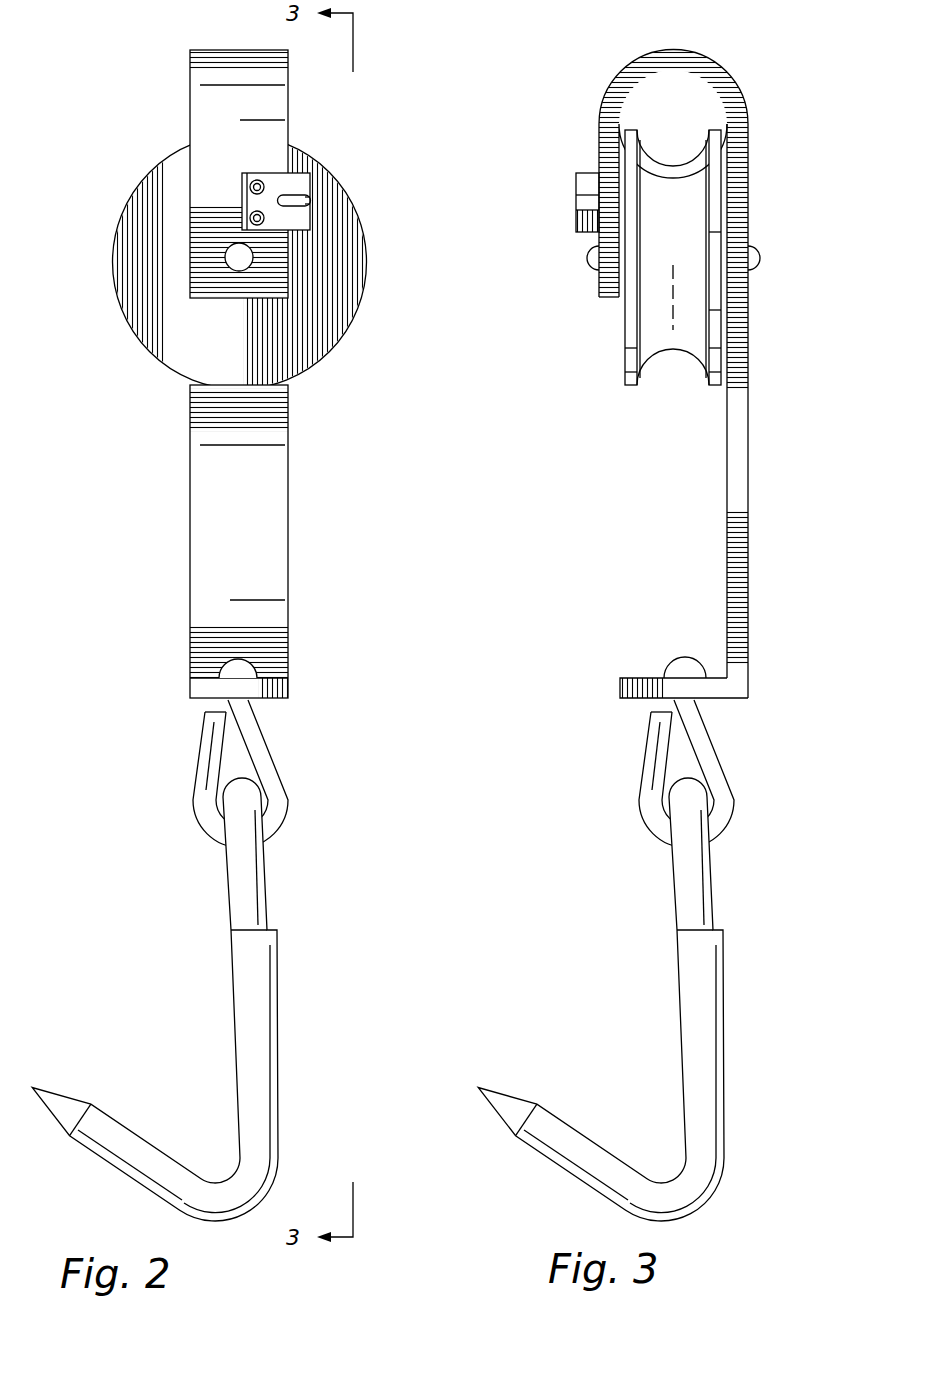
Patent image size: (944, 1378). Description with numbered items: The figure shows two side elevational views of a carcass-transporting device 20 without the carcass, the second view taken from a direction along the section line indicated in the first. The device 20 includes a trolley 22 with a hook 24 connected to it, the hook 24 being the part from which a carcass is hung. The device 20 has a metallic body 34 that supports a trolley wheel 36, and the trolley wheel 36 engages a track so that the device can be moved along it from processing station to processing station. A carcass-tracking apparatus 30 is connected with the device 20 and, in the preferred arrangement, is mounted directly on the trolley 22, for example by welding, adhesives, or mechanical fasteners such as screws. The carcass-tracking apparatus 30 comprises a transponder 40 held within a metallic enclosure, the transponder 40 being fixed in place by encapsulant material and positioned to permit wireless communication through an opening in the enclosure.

In FIG. 2, the carcass-transporting device 20 is at (85, 84).
In FIG. 3, the carcass-transporting device 20 is at (786, 80).
In FIG. 2, the trolley 22 is at (235, 57).
In FIG. 3, the trolley 22 is at (673, 52).
In FIG. 2, the hook 24 is at (233, 1012).
In FIG. 3, the hook 24 is at (678, 1001).
In FIG. 2, the carcass-tracking apparatus 30 is at (270, 172).
In FIG. 3, the carcass-tracking apparatus 30 is at (576, 185).
In FIG. 2, the metallic body 34 is at (290, 515).
In FIG. 3, the metallic body 34 is at (752, 478).
In FIG. 2, the trolley wheel 36 is at (152, 350).
In FIG. 3, the trolley wheel 36 is at (625, 357).
In FIG. 2, the transponder 40 is at (307, 200).
In FIG. 3, the transponder 40 is at (576, 203).